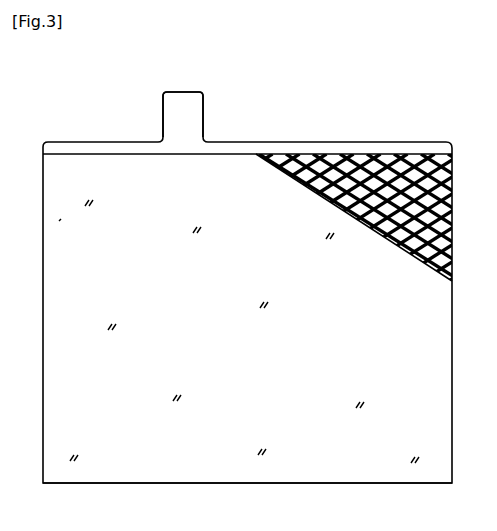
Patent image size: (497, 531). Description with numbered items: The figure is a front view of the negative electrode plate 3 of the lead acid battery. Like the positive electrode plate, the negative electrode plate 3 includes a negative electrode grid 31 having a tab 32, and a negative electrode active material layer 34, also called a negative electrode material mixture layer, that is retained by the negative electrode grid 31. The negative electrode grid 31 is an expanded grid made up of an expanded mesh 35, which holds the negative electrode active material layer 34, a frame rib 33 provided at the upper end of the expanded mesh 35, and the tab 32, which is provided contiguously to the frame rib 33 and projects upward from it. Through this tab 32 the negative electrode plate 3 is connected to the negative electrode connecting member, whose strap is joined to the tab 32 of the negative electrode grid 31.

The negative electrode plate 3 is at (325, 141).
The negative electrode grid 31 is at (400, 150).
The tab 32 is at (183, 107).
The frame rib 33 is at (260, 146).
The negative electrode active material layer 34 is at (318, 468).
The expanded mesh 35 is at (288, 160).